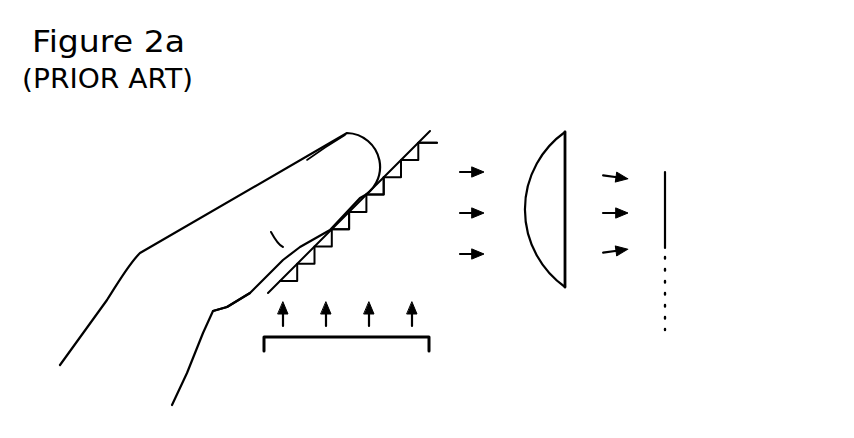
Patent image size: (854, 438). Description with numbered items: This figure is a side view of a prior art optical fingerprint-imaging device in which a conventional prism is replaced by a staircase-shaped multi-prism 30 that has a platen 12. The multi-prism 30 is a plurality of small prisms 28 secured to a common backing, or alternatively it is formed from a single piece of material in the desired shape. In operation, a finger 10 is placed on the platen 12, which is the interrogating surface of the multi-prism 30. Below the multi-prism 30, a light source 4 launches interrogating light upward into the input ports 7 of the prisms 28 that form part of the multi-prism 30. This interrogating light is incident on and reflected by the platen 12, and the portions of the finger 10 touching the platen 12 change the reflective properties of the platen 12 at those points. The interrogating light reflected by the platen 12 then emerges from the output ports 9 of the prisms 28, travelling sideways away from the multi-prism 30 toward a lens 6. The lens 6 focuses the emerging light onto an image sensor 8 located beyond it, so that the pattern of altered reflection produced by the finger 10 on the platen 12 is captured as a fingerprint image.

The light source 4 is at (430, 350).
The lens 6 is at (566, 141).
The input ports 7 is at (337, 230).
The image sensor 8 is at (666, 233).
The output ports 9 is at (372, 200).
The finger 10 is at (223, 198).
The platen 12 is at (407, 150).
The small prisms 28 is at (278, 285).
The multi-prism 30 is at (423, 139).